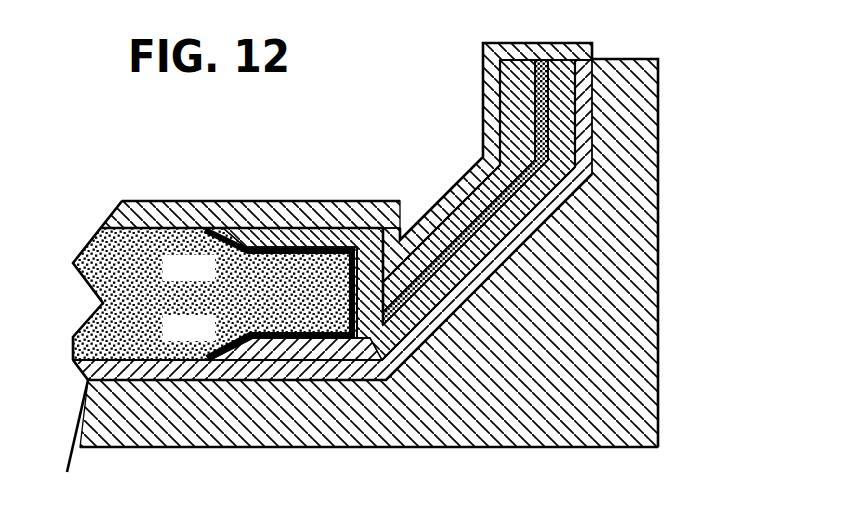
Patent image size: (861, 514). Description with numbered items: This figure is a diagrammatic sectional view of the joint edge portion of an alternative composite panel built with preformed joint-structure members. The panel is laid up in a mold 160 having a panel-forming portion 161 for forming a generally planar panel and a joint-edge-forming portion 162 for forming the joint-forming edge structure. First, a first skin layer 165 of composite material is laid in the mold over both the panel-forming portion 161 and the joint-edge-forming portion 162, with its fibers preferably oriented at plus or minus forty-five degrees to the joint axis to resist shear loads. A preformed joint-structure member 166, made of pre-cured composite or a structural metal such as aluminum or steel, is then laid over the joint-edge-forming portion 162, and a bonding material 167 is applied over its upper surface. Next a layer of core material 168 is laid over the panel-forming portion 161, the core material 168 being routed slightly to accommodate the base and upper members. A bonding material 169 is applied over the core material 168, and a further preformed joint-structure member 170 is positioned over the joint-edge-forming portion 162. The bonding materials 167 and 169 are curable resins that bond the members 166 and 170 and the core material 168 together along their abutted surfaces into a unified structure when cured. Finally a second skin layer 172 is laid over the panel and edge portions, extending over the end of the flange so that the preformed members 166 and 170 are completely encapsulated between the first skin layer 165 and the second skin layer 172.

The mold 160 is at (718, 323).
The panel-forming portion 161 is at (200, 420).
The joint-edge-forming portion 162 is at (642, 190).
The first skin layer 165 is at (322, 376).
The preformed joint-structure member 166 is at (563, 84).
The bonding material 167 is at (252, 324).
The core material 168 is at (127, 297).
The bonding material 169 is at (245, 256).
The preformed joint-structure member 170 is at (360, 230).
The second skin layer 172 is at (218, 202).